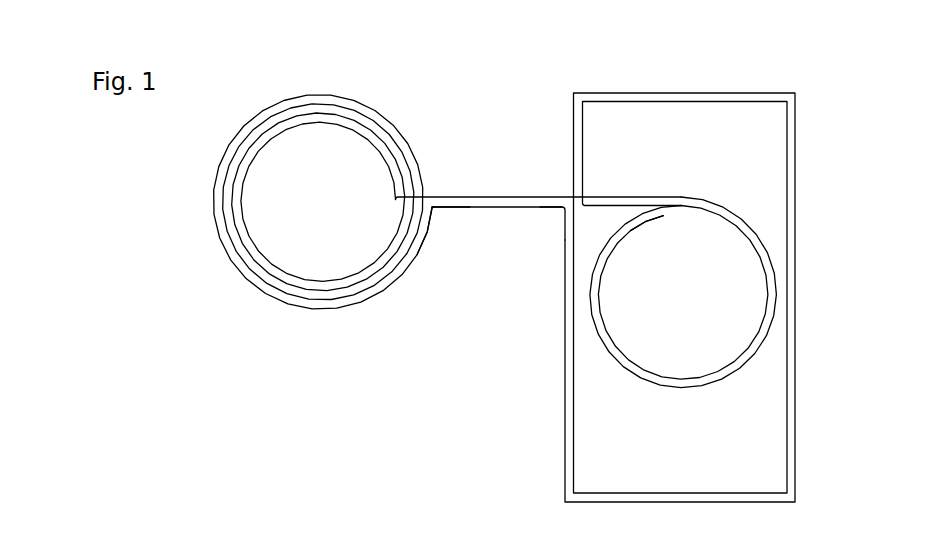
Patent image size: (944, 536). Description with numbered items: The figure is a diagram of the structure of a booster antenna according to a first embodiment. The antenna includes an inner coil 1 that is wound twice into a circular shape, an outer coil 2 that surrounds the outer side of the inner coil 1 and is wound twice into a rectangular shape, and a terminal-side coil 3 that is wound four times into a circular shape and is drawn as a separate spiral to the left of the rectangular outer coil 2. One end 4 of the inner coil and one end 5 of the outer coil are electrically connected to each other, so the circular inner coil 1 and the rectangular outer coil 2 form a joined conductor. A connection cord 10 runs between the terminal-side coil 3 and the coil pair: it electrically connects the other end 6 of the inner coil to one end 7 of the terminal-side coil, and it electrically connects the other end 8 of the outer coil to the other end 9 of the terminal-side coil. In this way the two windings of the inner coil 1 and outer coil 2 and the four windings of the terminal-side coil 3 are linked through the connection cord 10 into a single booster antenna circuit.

The inner coil 1 is at (748, 216).
The outer coil 2 is at (770, 93).
The terminal-side coil 3 is at (342, 93).
The one end of the inner coil 4 is at (661, 213).
The one end of the outer coil 5 is at (584, 204).
The other end of the inner coil 6 is at (563, 197).
The one end of the terminal-side coil 7 is at (430, 196).
The other end of the outer coil 8 is at (564, 209).
The other end of the terminal-side coil 9 is at (432, 209).
The connection cord 10 is at (489, 208).